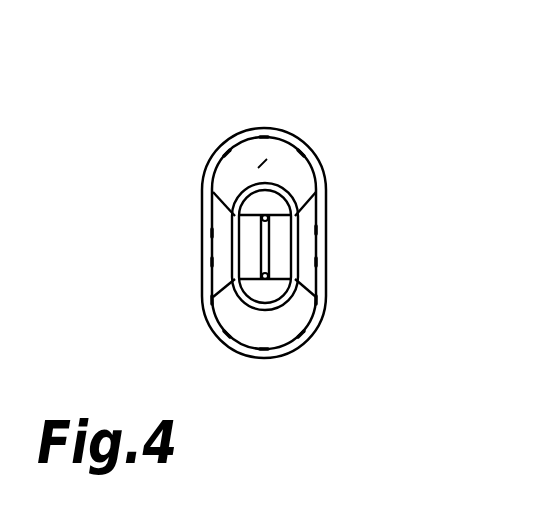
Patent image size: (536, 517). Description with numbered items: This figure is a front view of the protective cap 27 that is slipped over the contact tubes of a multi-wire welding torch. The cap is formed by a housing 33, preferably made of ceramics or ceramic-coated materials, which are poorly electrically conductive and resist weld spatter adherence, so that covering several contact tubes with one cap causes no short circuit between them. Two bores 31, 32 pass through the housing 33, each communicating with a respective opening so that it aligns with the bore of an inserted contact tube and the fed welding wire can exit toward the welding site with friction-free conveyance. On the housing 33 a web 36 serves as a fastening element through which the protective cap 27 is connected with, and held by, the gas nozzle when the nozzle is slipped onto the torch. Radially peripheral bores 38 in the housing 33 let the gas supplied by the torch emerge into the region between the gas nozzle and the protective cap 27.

The protective cap 27 is at (372, 155).
The bore 31 is at (263, 216).
The bore 32 is at (263, 277).
The housing 33 is at (258, 168).
The web 36 is at (317, 273).
The bores 38 is at (265, 141).